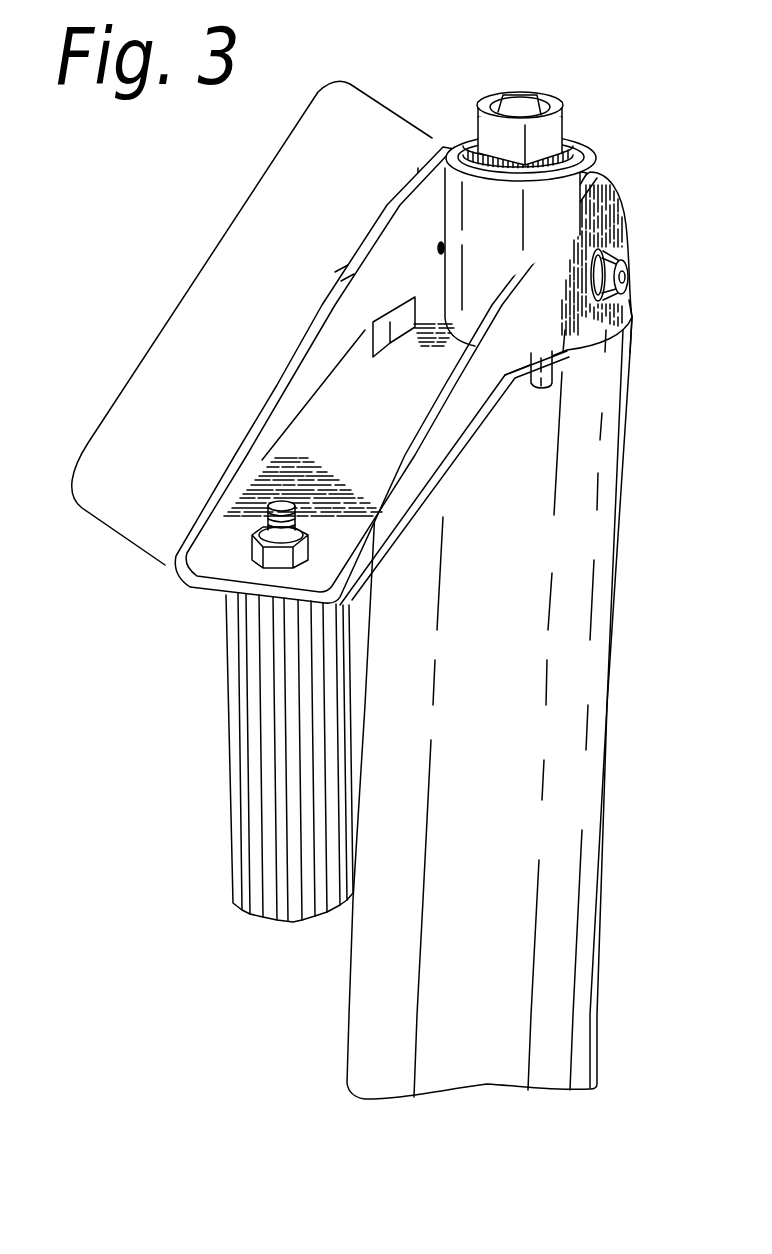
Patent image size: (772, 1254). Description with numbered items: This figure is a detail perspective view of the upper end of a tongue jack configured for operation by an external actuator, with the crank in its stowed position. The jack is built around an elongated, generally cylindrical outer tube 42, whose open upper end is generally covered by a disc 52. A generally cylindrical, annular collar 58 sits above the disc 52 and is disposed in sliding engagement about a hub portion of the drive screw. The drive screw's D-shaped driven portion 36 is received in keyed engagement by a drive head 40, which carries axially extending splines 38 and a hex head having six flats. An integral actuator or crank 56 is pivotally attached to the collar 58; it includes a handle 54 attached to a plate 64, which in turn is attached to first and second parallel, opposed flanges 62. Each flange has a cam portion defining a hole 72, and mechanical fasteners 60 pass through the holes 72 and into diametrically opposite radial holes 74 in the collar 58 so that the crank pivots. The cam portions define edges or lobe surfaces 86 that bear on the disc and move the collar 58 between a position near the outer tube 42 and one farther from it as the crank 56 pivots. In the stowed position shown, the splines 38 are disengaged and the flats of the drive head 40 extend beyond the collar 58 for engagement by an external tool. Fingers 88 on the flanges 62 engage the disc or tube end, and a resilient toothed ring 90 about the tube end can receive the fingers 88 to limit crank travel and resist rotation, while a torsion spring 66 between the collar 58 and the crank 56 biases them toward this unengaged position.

The driven portion 36 is at (515, 108).
The splines 38 is at (476, 150).
The drive head 40 is at (552, 137).
The outer tube 42 is at (587, 527).
The disc 52 is at (568, 344).
The handle 54 is at (227, 750).
The integral actuator 56 is at (203, 272).
The collar 58 is at (510, 228).
The mechanical fasteners 60 is at (624, 262).
The flanges 62 is at (420, 292).
The plate 64 is at (394, 429).
The torsion spring 66 is at (380, 337).
The hole 72 is at (412, 325).
The holes 74 is at (440, 246).
The edges 86 is at (552, 312).
The fingers 88 is at (557, 346).
The ring 90 is at (632, 317).